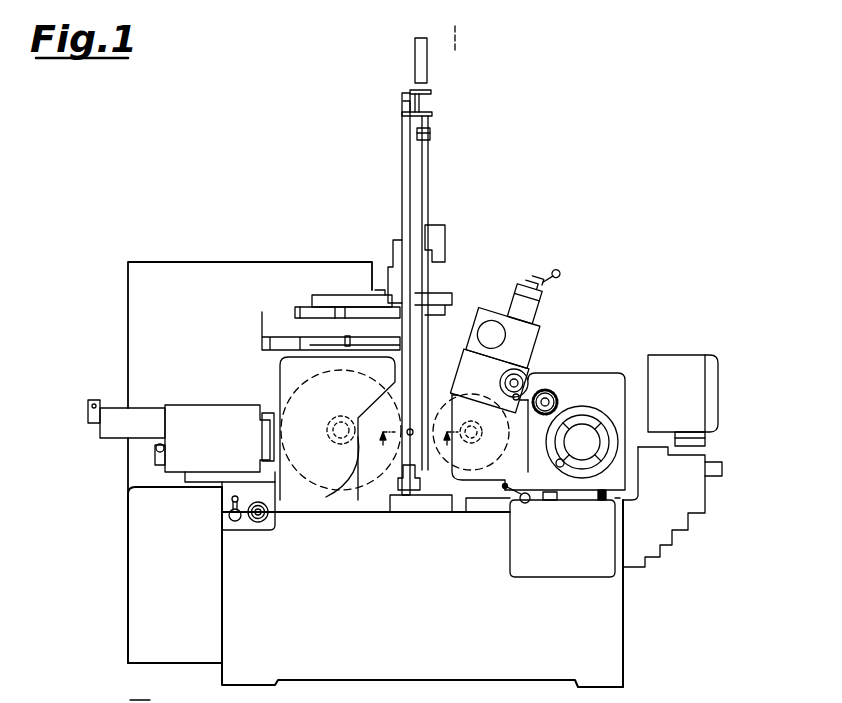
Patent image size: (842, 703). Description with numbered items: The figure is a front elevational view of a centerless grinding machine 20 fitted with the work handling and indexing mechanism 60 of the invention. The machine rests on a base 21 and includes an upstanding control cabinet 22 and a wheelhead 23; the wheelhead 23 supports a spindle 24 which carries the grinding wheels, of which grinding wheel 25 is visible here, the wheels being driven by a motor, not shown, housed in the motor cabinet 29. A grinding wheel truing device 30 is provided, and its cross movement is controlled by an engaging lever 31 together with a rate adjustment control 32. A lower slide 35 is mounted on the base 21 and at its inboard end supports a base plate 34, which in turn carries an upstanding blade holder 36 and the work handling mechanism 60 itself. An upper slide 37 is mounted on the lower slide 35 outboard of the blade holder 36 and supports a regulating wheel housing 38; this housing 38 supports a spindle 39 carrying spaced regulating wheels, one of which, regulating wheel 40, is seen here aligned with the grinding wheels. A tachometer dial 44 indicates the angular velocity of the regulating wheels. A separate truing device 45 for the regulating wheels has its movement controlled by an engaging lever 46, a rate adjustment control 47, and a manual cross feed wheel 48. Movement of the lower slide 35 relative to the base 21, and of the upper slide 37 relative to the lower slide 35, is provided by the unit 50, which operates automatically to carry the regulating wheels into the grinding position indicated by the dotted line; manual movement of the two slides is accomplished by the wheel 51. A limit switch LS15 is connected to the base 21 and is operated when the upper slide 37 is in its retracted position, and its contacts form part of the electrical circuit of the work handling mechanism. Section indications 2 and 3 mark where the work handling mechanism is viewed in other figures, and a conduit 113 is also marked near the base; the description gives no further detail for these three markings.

The section line 2- 2 is at (455, 26).
The section line 3- 3 is at (418, 447).
The centerless grinding machine 20 is at (626, 609).
The base 21 is at (340, 621).
The control cabinet 22 is at (128, 312).
The wheelhead 23 is at (280, 373).
The spindle 24 is at (338, 426).
The grinding wheel 25 is at (392, 423).
The motor cabinet 29 is at (128, 619).
The grinding wheel truing device 30 is at (200, 407).
The engaging lever 31 is at (230, 512).
The rate adjustment control 32 is at (262, 522).
The base plate 34 is at (385, 500).
The lower slide 35 is at (470, 512).
The blade holder 36 is at (425, 463).
The upper slide 37 is at (585, 385).
The regulating wheel housing 38 is at (484, 388).
The spindle 39 is at (471, 436).
The regulating wheel 40 is at (455, 396).
The tachometer dial 44 is at (548, 390).
The truing device 45 is at (508, 342).
The engaging lever 46 is at (526, 504).
The rate adjustment control 47 is at (551, 501).
The manual cross feed wheel 48 is at (522, 372).
The unit 50 is at (718, 385).
The wheel 51 is at (597, 408).
The work handling mechanism 60 is at (398, 132).
The conduit 113 is at (162, 695).
The limit switch LS15 is at (601, 512).